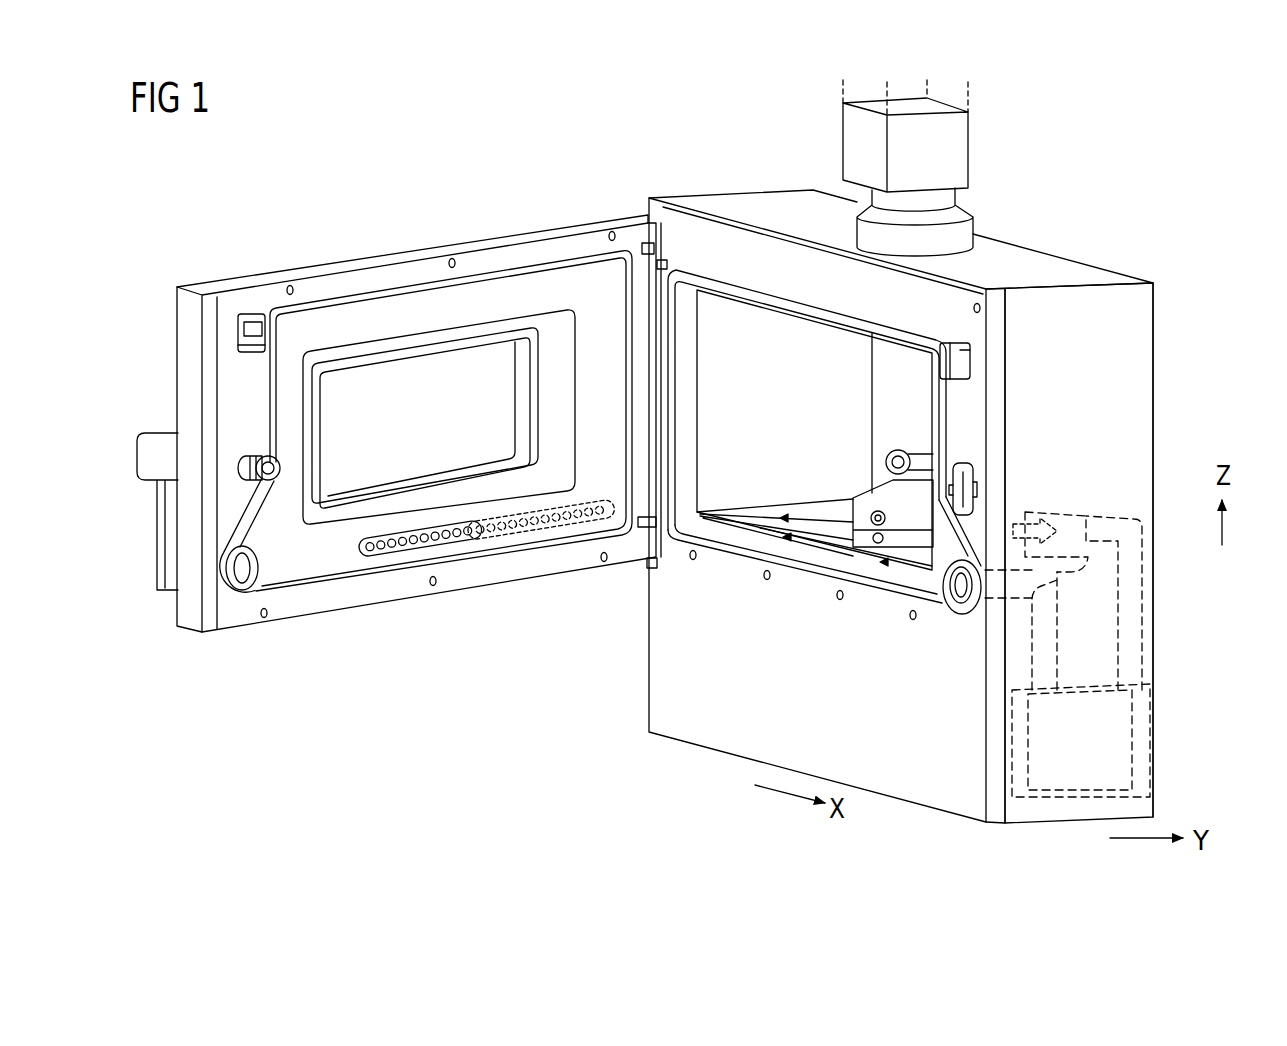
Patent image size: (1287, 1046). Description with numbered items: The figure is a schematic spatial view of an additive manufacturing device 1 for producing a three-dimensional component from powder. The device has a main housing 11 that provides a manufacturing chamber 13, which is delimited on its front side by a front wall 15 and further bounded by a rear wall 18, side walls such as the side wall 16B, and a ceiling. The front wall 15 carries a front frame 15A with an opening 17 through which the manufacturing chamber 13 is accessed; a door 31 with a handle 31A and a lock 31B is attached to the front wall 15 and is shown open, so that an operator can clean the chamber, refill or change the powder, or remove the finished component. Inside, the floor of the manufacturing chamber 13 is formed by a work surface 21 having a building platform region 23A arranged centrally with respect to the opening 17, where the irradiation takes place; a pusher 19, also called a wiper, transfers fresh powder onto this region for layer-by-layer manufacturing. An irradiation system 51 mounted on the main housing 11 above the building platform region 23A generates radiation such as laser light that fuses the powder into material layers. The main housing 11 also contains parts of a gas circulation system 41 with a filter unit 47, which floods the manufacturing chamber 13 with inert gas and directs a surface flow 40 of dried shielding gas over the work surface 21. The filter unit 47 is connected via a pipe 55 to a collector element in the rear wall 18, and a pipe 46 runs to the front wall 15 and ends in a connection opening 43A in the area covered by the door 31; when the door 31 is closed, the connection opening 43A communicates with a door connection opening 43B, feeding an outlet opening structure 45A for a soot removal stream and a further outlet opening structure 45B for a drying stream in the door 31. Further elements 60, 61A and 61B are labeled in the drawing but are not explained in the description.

The additive manufacturing device 1 is at (440, 768).
The main housing 11 is at (1200, 208).
The manufacturing chamber 13 is at (725, 480).
The front wall 15 is at (668, 208).
The front frame 15A is at (778, 248).
The side wall 16B is at (1140, 330).
The opening 17 is at (752, 318).
The rear wall 18 is at (1180, 398).
The pusher 19 is at (876, 502).
The work surface 21 is at (790, 515).
The building platform region 23A is at (922, 545).
The door 31 is at (338, 232).
The handle 31A is at (165, 438).
The lock 31B is at (262, 455).
The surface flow 40 is at (1048, 522).
The gas circulation system 41 is at (1180, 758).
The connection opening 43A is at (950, 600).
The connection opening 43B is at (262, 562).
The outlet opening structure 45A is at (450, 548).
The outlet opening structure 45B is at (548, 522).
The pipe 46 is at (1032, 657).
The filter unit 47 is at (1152, 724).
The irradiation system 51 is at (852, 152).
The pipe 55 is at (1135, 638).
The valve 60 is at (1095, 505).
The door seal 61A is at (547, 268).
The housing seal 61B is at (827, 580).